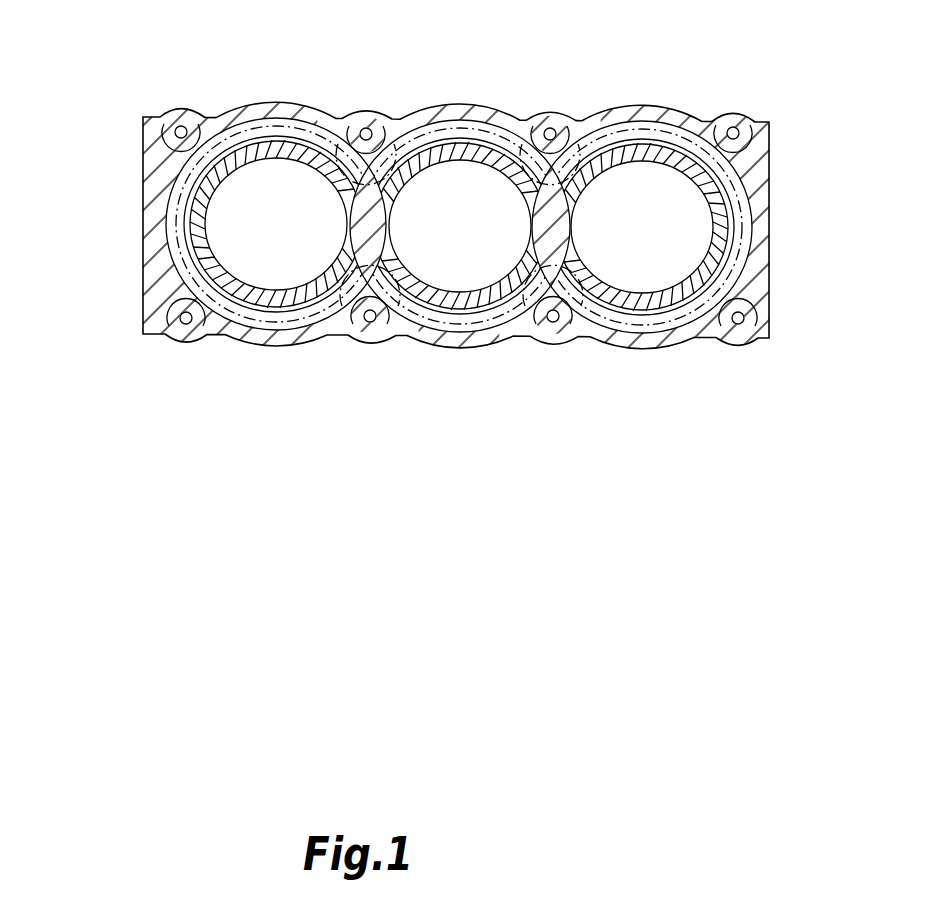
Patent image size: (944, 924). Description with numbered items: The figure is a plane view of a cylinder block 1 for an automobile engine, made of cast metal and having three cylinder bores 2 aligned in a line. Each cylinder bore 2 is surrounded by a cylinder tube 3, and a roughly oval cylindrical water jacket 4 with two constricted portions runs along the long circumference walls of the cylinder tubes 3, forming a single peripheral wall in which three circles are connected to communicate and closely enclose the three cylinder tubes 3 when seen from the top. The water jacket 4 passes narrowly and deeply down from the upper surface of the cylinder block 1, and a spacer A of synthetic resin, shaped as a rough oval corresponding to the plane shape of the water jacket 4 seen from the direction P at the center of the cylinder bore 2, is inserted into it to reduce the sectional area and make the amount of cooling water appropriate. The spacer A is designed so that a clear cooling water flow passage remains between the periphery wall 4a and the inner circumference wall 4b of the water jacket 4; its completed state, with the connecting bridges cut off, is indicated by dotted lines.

The cylinder block 1 is at (146, 114).
The cylinder bore 2 is at (680, 205).
The cylinder tube 3 is at (497, 157).
The water jacket 4 is at (420, 112).
The periphery wall 4a is at (240, 133).
The inner circumference wall 4b is at (648, 142).
The direction of the center of the cylinder bore P is at (279, 175).
The spacer A is at (481, 272).